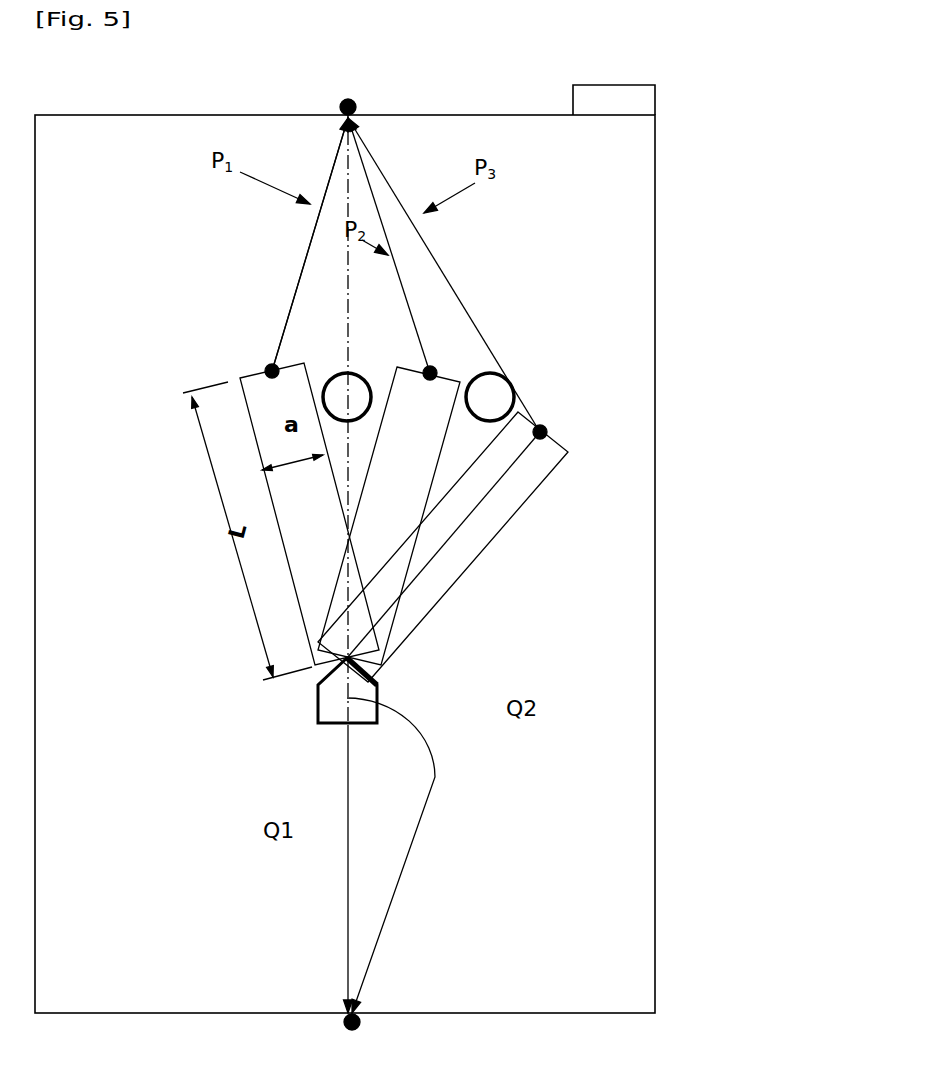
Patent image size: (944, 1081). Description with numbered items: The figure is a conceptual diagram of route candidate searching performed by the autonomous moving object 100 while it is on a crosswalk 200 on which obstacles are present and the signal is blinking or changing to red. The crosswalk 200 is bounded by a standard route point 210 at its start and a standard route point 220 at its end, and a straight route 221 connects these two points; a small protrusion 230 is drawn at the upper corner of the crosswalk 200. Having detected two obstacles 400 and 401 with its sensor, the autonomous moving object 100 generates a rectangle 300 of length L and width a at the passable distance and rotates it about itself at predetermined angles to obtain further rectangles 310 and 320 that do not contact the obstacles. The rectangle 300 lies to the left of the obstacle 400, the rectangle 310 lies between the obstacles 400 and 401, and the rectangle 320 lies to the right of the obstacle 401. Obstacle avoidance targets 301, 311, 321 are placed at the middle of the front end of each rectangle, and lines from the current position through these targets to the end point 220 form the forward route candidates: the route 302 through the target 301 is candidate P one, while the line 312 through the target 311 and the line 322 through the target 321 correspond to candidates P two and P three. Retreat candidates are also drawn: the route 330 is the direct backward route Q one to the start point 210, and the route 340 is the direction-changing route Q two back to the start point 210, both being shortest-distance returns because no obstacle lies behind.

The autonomous moving object 100 is at (318, 723).
The crosswalk 200 is at (95, 114).
The standard route point 210 is at (352, 1031).
The standard route point 220 is at (350, 99).
The route 221 is at (328, 185).
The protrusion 230 is at (600, 90).
The rectangle 300 is at (247, 377).
The obstacle avoidance target 301 is at (272, 371).
The route 302 is at (300, 278).
The rectangle 310 is at (440, 453).
The obstacle avoidance target 311 is at (430, 373).
The second optical path 312 is at (409, 307).
The rectangle 320 is at (530, 497).
The obstacle avoidance target 321 is at (540, 432).
The third optical path 322 is at (443, 275).
The route 330 is at (348, 808).
The route 340 is at (432, 748).
The obstacle 400 is at (338, 372).
The obstacle 401 is at (505, 378).